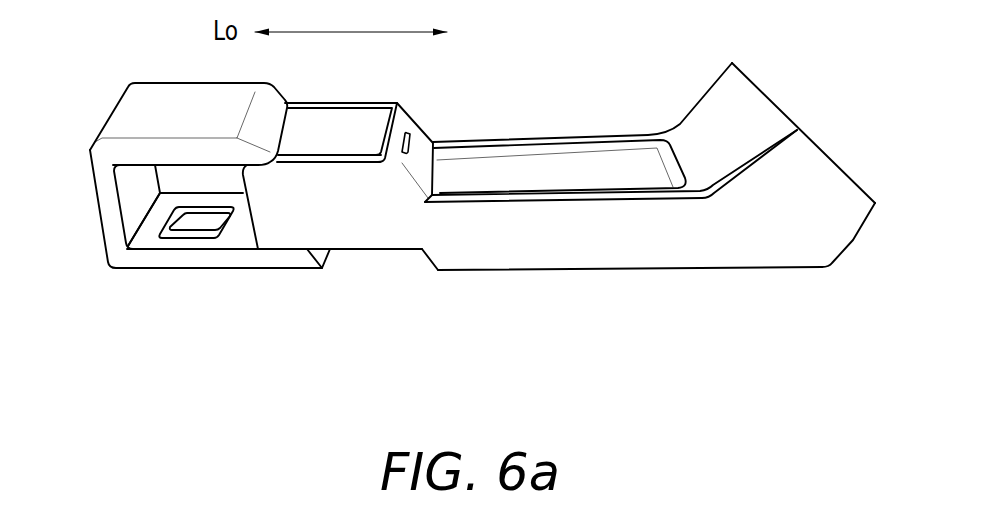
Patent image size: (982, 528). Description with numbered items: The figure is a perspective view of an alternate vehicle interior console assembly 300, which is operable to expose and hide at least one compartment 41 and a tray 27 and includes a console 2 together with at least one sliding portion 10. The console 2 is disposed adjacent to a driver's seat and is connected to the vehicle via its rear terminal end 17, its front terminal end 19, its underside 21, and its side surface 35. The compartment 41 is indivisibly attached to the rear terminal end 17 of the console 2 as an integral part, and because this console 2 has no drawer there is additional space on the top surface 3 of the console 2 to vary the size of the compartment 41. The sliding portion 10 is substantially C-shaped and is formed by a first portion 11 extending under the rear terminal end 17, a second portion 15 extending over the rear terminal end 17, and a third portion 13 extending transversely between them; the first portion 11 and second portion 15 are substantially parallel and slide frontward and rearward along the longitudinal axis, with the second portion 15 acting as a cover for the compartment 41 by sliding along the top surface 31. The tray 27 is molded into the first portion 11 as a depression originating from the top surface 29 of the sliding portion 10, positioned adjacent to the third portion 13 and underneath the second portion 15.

The console 2 is at (587, 247).
The top surface 3 is at (573, 175).
The sliding portion 10 is at (107, 152).
The first portion 11 is at (258, 260).
The third portion 13 is at (113, 230).
The second portion 15 is at (197, 102).
The rear terminal end 17 is at (297, 210).
The front terminal end 19 is at (802, 173).
The underside 21 is at (378, 248).
The tray 27 is at (202, 228).
The top surface 29 is at (143, 233).
The top surface 31 is at (398, 103).
The side surface 35 is at (712, 242).
The compartment 41 is at (330, 135).
The console assembly 300 is at (742, 416).